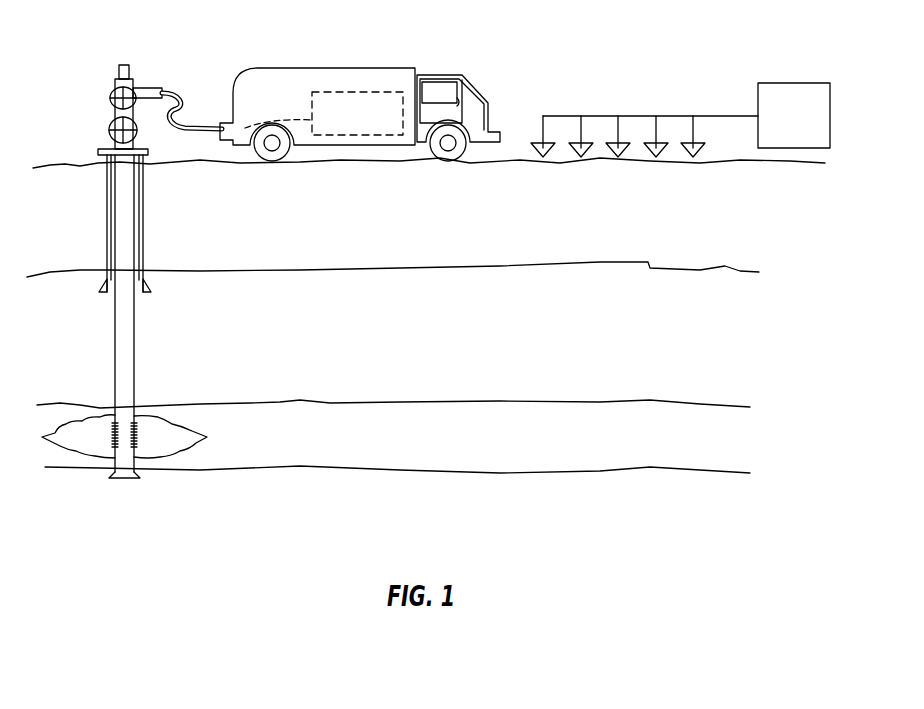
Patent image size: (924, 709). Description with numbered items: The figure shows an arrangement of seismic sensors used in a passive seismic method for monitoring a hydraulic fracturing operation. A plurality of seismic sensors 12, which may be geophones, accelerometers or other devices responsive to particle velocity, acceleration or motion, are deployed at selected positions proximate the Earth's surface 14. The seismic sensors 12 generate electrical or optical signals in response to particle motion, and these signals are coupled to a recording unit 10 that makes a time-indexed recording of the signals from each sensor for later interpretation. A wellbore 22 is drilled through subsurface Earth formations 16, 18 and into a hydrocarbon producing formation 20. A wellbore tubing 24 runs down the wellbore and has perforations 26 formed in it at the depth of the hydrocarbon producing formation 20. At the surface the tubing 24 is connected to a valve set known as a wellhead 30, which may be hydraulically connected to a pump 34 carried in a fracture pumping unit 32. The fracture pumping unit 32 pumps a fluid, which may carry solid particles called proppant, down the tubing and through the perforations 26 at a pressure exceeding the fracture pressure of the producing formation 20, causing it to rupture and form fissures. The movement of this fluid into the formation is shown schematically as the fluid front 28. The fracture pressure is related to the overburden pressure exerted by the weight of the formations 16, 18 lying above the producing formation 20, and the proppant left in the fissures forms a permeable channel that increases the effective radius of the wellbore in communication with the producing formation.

The recording unit 10 is at (797, 83).
The seismic sensors 12 is at (531, 148).
The Earth's surface 14 is at (470, 164).
The subsurface Earth formation 16 is at (337, 225).
The subsurface Earth formation 18 is at (337, 332).
The hydrocarbon producing formation 20 is at (337, 455).
The wellbore 22 is at (143, 217).
The wellbore tubing 24 is at (135, 332).
The perforations 26 is at (137, 437).
The fluid front 28 is at (200, 437).
The wellhead 30 is at (150, 87).
The fracture pumping unit 32 is at (292, 68).
The pump 34 is at (332, 92).